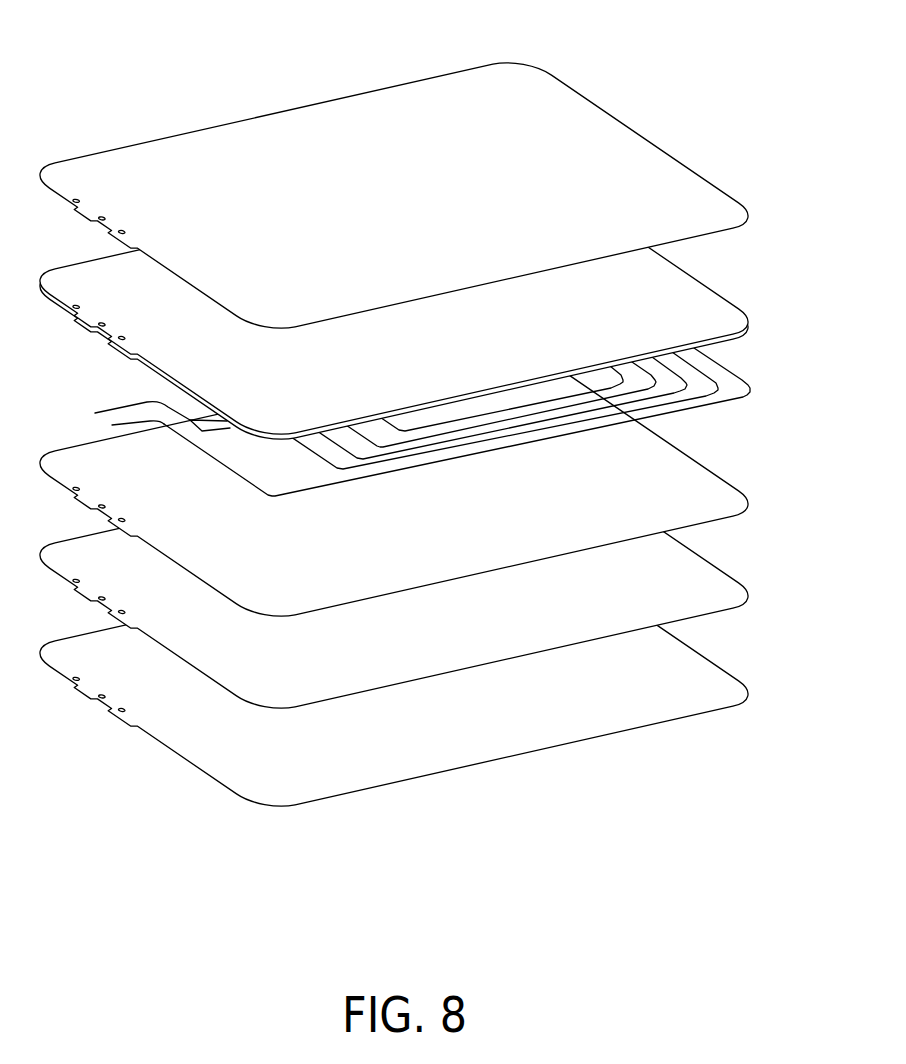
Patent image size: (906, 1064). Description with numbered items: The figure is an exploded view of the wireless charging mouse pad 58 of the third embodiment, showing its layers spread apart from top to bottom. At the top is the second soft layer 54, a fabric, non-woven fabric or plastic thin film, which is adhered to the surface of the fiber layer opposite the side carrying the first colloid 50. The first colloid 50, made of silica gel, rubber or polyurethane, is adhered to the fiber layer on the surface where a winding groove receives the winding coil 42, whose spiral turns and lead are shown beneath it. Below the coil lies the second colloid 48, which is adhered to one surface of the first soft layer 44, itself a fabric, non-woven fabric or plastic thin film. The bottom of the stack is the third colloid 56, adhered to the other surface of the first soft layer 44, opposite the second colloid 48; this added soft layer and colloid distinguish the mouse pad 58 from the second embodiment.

The winding coil 42 is at (128, 407).
The first soft layer 44 is at (495, 647).
The second colloid 48 is at (690, 460).
The first colloid 50 is at (687, 290).
The second soft layer 54 is at (294, 121).
The third colloid 56 is at (350, 783).
The wireless charging mouse pad 58 is at (400, 465).